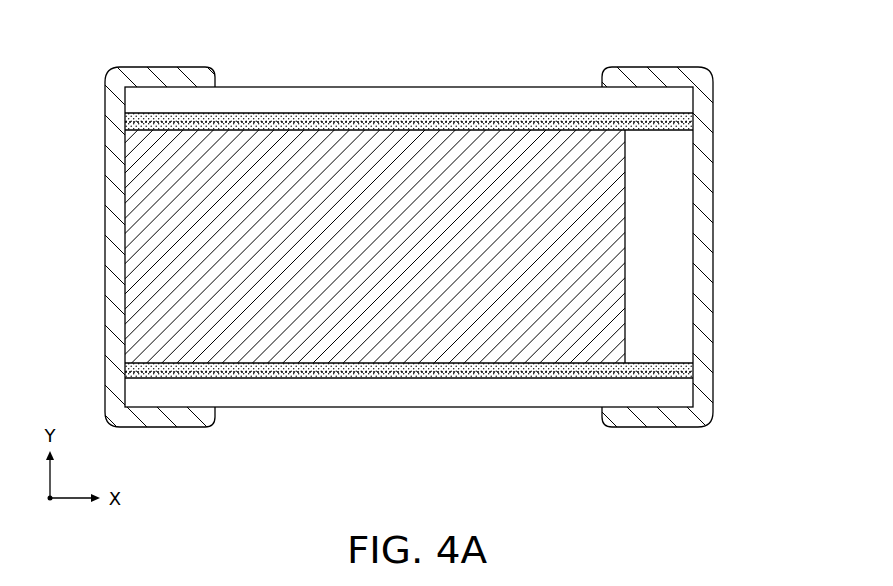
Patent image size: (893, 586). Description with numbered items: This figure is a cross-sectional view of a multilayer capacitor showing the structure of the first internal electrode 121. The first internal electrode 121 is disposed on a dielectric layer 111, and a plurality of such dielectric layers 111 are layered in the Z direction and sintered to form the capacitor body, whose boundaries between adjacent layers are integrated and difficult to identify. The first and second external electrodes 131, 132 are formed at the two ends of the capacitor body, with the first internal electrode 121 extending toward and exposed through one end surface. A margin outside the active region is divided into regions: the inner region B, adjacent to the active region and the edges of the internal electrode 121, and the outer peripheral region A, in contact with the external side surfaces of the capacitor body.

The dielectric layer 111 is at (672, 233).
The first internal electrode 121 is at (313, 147).
The first external electrode 131 is at (182, 80).
The second external electrode 132 is at (650, 77).
The outer/peripheral region A is at (432, 97).
The region B is at (493, 120).